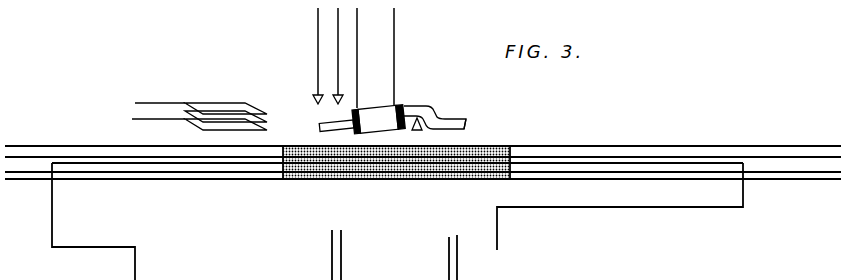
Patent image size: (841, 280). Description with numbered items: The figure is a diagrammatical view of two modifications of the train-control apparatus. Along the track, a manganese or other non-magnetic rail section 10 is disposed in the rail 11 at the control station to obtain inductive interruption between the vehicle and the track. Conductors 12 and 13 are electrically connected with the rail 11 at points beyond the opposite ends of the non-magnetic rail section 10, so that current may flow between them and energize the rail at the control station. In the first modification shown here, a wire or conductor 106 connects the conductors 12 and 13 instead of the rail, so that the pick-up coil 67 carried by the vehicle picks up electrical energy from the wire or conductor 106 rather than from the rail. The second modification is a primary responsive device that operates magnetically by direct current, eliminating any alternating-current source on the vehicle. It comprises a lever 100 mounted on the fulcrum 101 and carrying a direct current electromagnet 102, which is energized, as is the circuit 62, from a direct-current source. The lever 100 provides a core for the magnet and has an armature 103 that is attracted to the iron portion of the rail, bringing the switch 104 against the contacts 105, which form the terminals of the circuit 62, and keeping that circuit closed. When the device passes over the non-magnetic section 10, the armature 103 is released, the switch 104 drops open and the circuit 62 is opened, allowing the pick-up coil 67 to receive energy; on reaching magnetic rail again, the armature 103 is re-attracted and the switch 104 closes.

The non-magnetic rail section 10 is at (488, 145).
The rail 11 is at (625, 150).
The conductor 12 is at (572, 207).
The conductor 13 is at (52, 220).
The circuit 62 is at (338, 33).
The pick-up coil 67 is at (213, 102).
The lever 100 is at (412, 106).
The fulcrum 101 is at (435, 117).
The direct current electromagnet 102 is at (368, 116).
The armature 103 is at (467, 118).
The switch 104 is at (317, 122).
The contacts 105 is at (336, 94).
The wire or conductor 106 is at (188, 163).